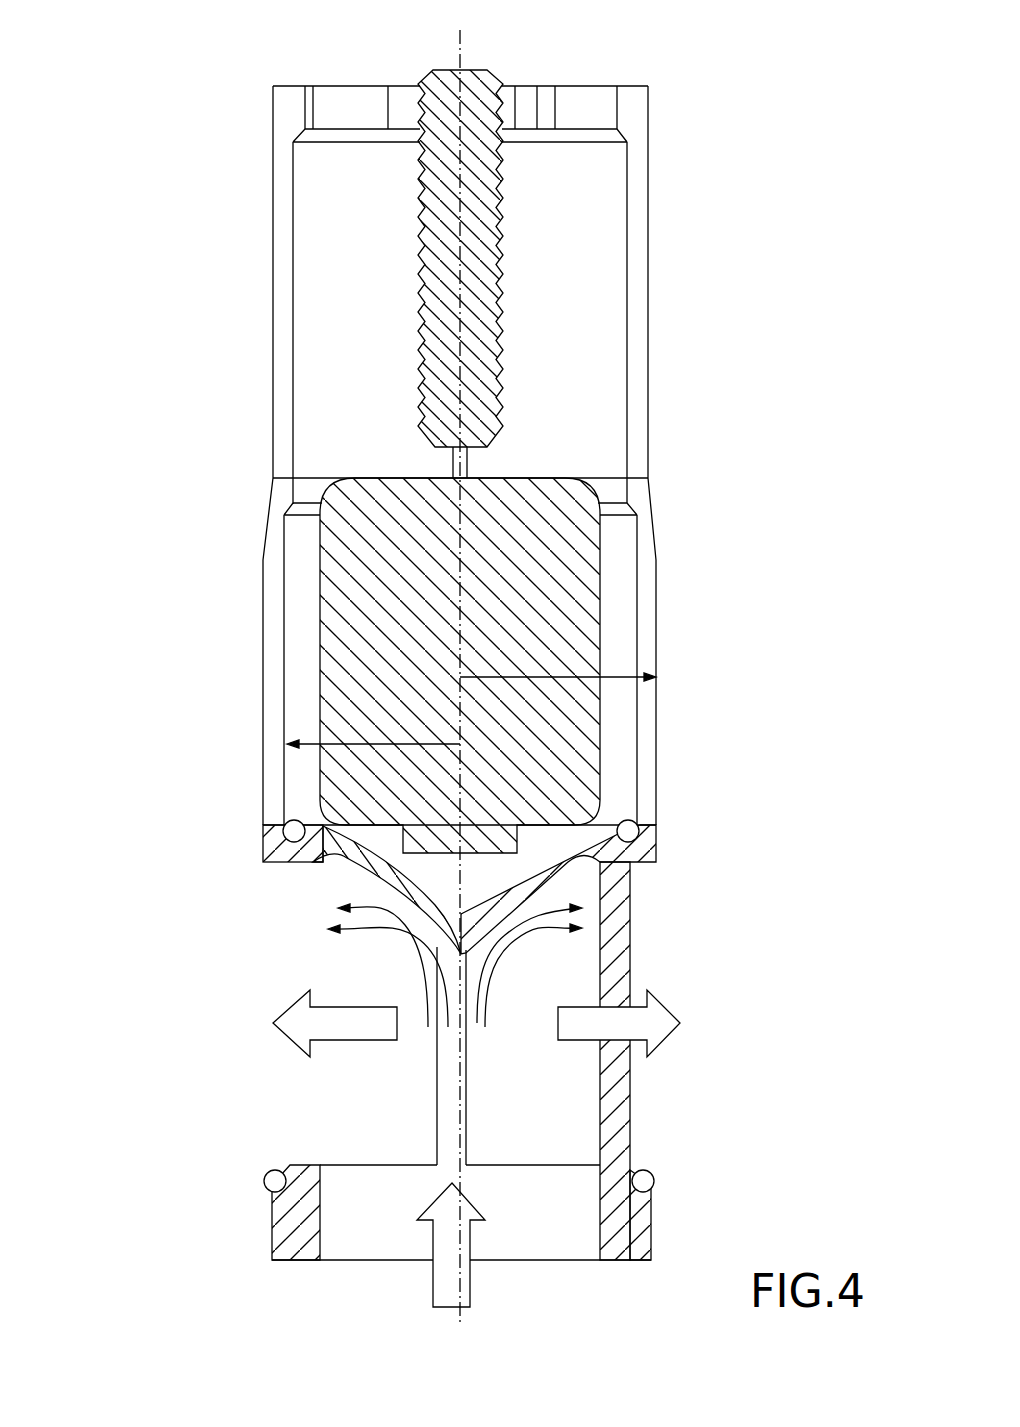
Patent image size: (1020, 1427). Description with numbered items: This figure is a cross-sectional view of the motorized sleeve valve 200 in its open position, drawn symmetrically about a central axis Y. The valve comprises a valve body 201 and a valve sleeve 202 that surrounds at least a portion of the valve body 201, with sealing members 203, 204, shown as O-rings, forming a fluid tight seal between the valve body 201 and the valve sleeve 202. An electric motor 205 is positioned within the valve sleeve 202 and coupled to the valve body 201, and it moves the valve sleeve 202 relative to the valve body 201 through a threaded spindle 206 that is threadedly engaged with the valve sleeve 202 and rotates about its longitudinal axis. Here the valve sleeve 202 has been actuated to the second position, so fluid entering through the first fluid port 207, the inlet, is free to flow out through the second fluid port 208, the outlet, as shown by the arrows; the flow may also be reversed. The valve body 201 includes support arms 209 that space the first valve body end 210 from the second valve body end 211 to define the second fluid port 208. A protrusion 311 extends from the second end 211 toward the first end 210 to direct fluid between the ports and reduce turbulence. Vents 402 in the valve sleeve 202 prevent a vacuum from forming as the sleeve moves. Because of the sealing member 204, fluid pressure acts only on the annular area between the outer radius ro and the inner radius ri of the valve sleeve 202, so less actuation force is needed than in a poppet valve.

The motorized sleeve valve 200 is at (152, 114).
The valve body 201 is at (630, 965).
The valve sleeve 202 is at (656, 594).
The sealing member 203 is at (662, 1165).
The sealing member 204 is at (640, 830).
The electric motor 205 is at (478, 649).
The threaded spindle 206 is at (487, 72).
The first fluid port 207 is at (447, 1000).
The second fluid port 208 is at (266, 1139).
The support arms 209 is at (630, 925).
The first valve body end 210 is at (640, 1240).
The second valve body end 211 is at (293, 845).
The protrusion 311 is at (457, 925).
The vents 402 is at (348, 86).
The central axis Y is at (458, 42).
The outer radius ro is at (585, 677).
The inner radius ri is at (346, 743).